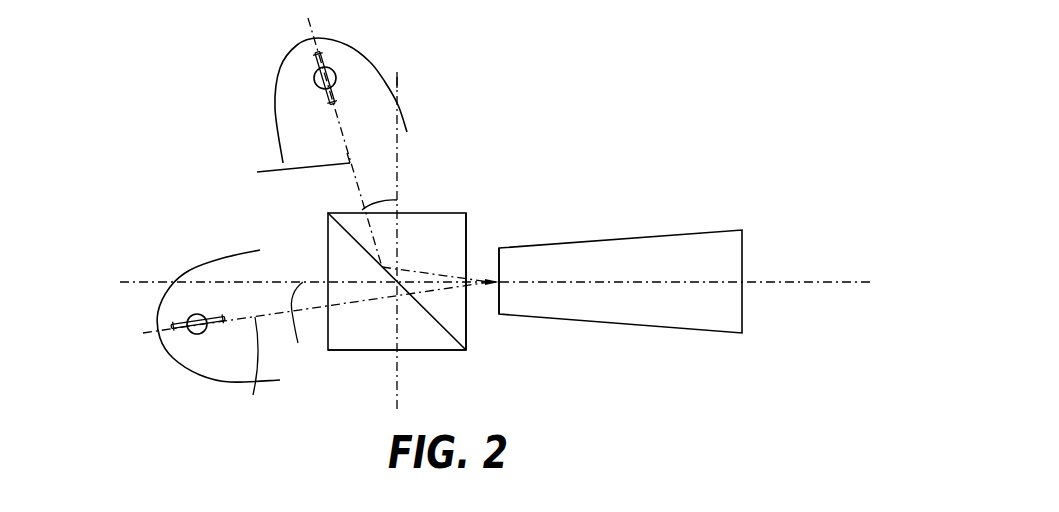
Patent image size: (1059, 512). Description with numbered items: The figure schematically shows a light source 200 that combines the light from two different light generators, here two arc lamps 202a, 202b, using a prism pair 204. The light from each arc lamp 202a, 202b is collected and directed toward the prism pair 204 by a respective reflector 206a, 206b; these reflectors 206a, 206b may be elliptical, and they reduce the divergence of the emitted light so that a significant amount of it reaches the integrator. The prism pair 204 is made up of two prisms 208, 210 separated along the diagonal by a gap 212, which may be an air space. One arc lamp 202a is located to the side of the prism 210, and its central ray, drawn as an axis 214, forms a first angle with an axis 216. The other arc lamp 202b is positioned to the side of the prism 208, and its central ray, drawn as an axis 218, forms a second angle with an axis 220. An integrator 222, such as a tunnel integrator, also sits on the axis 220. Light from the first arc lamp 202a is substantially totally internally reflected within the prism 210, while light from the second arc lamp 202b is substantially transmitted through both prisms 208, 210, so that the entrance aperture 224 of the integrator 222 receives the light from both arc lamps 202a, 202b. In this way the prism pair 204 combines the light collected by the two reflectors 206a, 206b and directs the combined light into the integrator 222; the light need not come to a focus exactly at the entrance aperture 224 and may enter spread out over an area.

The light source 200 is at (185, 53).
The arc lamp 202a is at (313, 81).
The arc lamp 202b is at (198, 335).
The prism pair 204 is at (328, 230).
The reflector 206a is at (348, 42).
The reflector 206b is at (158, 302).
The prism 208 is at (380, 351).
The prism 210 is at (467, 225).
The gap 212 is at (464, 350).
The axis 214 is at (281, 170).
The axis 216 is at (399, 80).
The axis 218 is at (247, 374).
The axis 220 is at (152, 281).
The integrator 222 is at (642, 238).
The entrance aperture 224 is at (498, 302).